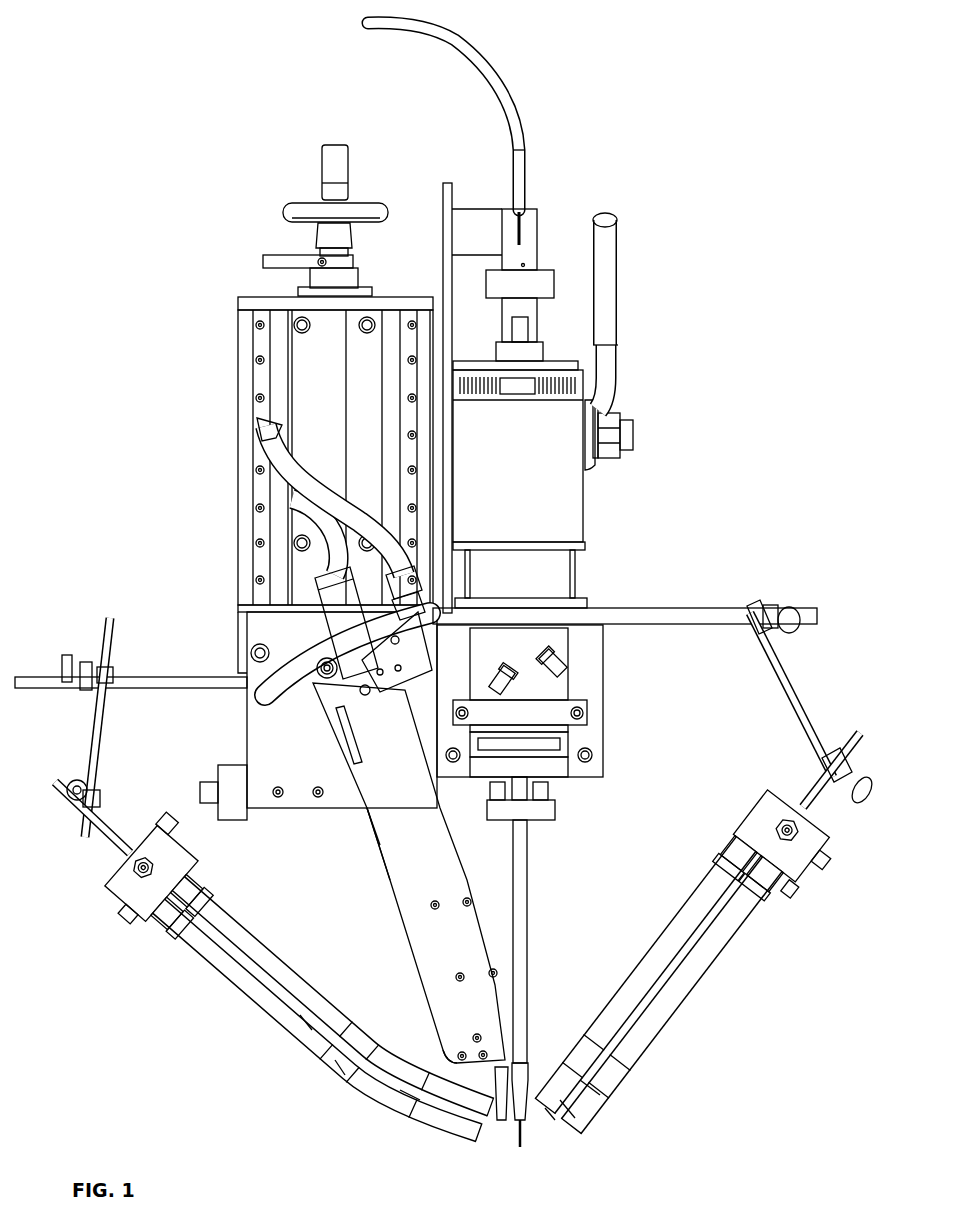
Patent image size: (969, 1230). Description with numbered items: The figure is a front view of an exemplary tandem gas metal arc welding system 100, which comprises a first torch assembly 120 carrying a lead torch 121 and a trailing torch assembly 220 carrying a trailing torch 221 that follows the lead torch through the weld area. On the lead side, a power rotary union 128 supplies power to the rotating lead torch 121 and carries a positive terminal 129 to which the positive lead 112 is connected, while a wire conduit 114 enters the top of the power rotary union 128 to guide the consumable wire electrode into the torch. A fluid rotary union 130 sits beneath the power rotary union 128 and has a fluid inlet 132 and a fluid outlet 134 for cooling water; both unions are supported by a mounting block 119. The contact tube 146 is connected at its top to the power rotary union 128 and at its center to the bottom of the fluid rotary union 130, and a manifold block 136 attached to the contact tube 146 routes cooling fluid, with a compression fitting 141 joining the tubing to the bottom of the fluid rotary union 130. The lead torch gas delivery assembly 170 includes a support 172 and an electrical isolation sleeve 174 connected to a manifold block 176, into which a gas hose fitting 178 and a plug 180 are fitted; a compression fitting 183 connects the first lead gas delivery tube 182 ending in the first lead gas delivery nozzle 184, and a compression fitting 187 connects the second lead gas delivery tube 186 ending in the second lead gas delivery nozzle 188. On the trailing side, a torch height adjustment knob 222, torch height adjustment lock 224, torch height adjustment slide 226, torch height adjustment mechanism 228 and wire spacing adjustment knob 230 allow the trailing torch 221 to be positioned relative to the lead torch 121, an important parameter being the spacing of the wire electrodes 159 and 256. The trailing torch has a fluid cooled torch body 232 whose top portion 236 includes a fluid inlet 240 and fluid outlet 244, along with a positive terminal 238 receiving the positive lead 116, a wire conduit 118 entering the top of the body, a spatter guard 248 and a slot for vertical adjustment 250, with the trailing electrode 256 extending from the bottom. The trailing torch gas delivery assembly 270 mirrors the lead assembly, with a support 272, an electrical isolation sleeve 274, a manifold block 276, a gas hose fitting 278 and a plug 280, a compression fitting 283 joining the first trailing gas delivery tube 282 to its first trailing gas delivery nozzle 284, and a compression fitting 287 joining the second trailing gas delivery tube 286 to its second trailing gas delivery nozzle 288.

The tandem gas metal arc welding system 100 is at (746, 101).
The positive lead 112 is at (617, 268).
The wire conduit 114 is at (513, 92).
The positive lead 116 is at (262, 440).
The wire conduit 118 is at (300, 527).
The mounting block 119 is at (535, 648).
The first torch assembly 120 is at (845, 565).
The lead torch 121 is at (547, 1007).
The power rotary union 128 is at (585, 503).
The positive terminal 129 is at (608, 408).
The fluid rotary union 130 is at (580, 670).
The fluid inlet 132 is at (510, 688).
The fluid outlet 134 is at (570, 660).
The manifold block 136 is at (555, 820).
The compression fitting 141 is at (550, 790).
The contact tube 146 is at (573, 1006).
The wire electrode 159 is at (525, 1148).
The lead torch gas delivery assembly 170 is at (765, 1068).
The support 172 is at (790, 682).
The electrical isolation sleeve 174 is at (822, 783).
The manifold block 176 is at (790, 889).
The gas hose fitting 178 is at (755, 822).
The plug 180 is at (821, 860).
The first lead gas delivery tube 182 is at (646, 975).
The compression fitting 183 is at (672, 995).
The first lead gas delivery nozzle 184 is at (625, 1093).
The second lead gas delivery tube 186 is at (685, 988).
The compression fitting 187 is at (749, 867).
The second lead gas delivery nozzle 188 is at (575, 1110).
The trailing torch assembly 220 is at (118, 578).
The trailing torch 221 is at (385, 880).
The torch height adjustment knob 222 is at (322, 168).
The torch height adjustment lock 224 is at (263, 262).
The torch height adjustment slide 226 is at (238, 390).
The torch height adjustment mechanism 228 is at (329, 731).
The wire spacing adjustment knob 230 is at (210, 782).
The torch body 232 is at (395, 918).
The top portion 236 is at (475, 952).
The positive terminal 238 is at (340, 655).
The fluid inlet 240 is at (257, 653).
The fluid outlet 244 is at (342, 672).
The spatter guard 248 is at (440, 1028).
The slot for vertical adjustment 250 is at (355, 755).
The trailing electrode 256 is at (497, 1138).
The trailing torch gas delivery assembly 270 is at (185, 993).
The support 272 is at (93, 737).
The electrical isolation sleeve 274 is at (117, 843).
The manifold block 276 is at (128, 914).
The gas hose fitting 278 is at (151, 873).
The plug 280 is at (167, 823).
The first trailing gas delivery tube 282 is at (335, 996).
The compression fitting 283 is at (319, 1021).
The first trailing gas delivery nozzle 284 is at (410, 1103).
The second trailing gas delivery tube 286 is at (283, 1037).
The compression fitting 287 is at (182, 906).
The second trailing gas delivery nozzle 288 is at (343, 1080).